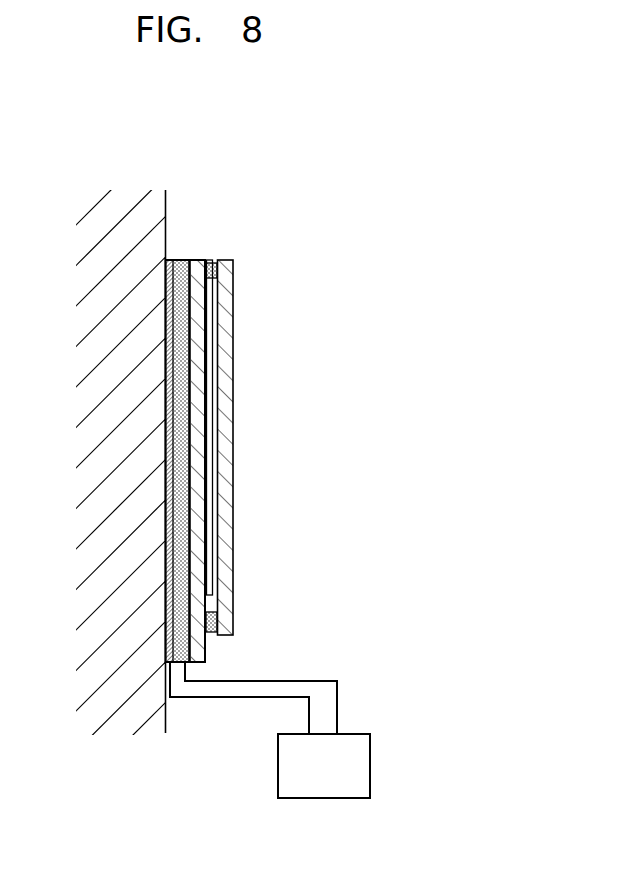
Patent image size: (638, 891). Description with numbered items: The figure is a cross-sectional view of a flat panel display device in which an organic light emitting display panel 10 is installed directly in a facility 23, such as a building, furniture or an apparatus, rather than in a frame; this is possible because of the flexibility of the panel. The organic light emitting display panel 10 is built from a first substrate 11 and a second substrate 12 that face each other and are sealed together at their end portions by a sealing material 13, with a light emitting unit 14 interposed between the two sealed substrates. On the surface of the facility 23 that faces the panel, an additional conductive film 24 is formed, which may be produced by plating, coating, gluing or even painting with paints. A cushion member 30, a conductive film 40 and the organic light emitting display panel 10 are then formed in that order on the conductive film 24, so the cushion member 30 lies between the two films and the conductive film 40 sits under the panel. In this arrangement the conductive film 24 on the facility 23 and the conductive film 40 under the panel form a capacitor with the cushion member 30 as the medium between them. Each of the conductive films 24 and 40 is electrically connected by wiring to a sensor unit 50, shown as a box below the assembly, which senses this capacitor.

The organic light emitting display panel 10 is at (250, 289).
The first substrate 11 is at (198, 518).
The second substrate 12 is at (232, 433).
The sealing material 13 is at (214, 620).
The light emitting unit 14 is at (210, 482).
The facility 23 is at (122, 695).
The conductive film 24 is at (162, 634).
The cushion member 30 is at (176, 260).
The conductive film 40 is at (189, 260).
The sensor unit 50 is at (360, 767).